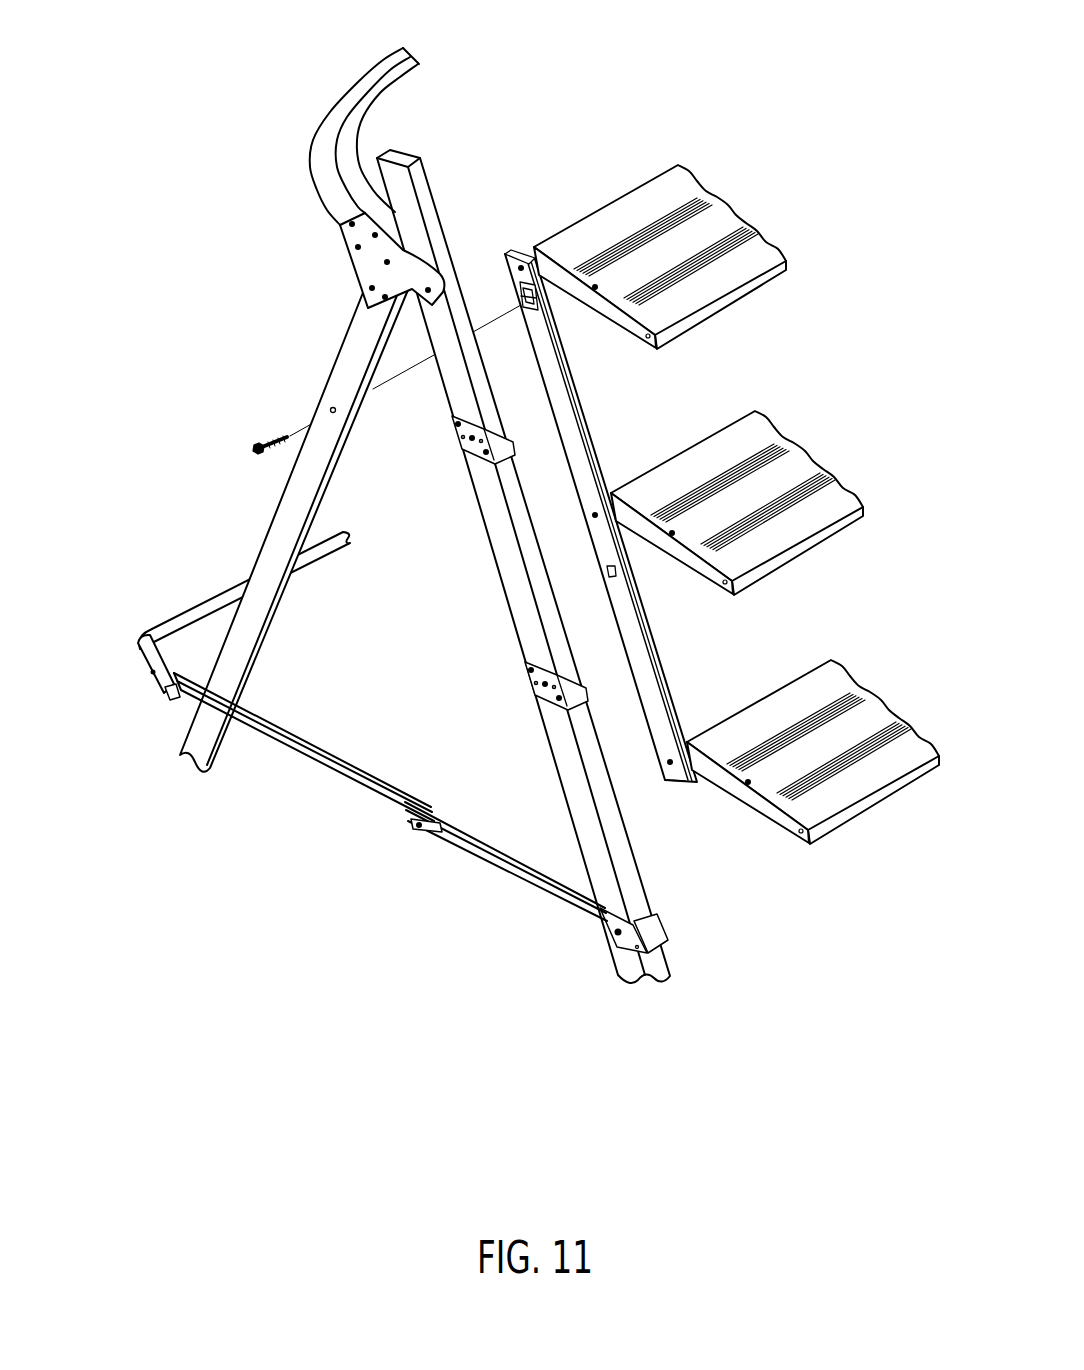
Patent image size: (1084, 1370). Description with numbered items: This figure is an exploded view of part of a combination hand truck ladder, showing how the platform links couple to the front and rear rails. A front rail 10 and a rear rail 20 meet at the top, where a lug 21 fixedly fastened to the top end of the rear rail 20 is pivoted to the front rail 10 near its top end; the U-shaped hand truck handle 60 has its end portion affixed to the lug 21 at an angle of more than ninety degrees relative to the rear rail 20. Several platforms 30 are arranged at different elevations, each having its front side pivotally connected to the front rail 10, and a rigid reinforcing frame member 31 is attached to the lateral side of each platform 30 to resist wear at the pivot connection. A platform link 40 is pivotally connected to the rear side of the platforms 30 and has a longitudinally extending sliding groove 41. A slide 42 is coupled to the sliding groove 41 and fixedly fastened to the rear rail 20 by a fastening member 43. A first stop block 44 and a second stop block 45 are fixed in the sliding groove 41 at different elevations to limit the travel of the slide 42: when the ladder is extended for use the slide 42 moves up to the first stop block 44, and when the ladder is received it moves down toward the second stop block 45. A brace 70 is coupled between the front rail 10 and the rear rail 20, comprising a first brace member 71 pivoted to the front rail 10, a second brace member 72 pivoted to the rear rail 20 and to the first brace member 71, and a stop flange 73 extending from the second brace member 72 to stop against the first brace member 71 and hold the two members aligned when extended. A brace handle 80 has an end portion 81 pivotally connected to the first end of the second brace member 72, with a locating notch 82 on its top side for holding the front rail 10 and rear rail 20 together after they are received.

The front rail 10 is at (487, 503).
The rear rail 20 is at (343, 372).
The lug 21 is at (370, 266).
The platform 30 is at (650, 190).
The rigid reinforcing frame member 31 is at (562, 268).
The platform link 40 is at (580, 397).
The sliding groove 41 is at (622, 620).
The slide 42 is at (532, 318).
The fastening member 43 is at (254, 450).
The first stop block 44 is at (524, 250).
The second stop block 45 is at (606, 571).
The U-shaped hand truck handle 60 is at (351, 81).
The brace 70 is at (390, 808).
The first brace member 71 is at (492, 868).
The second brace member 72 is at (287, 750).
The stop flange 73 is at (325, 751).
The brace handle 80 is at (197, 606).
The end portion 81 is at (141, 660).
The locating notch 82 is at (170, 698).